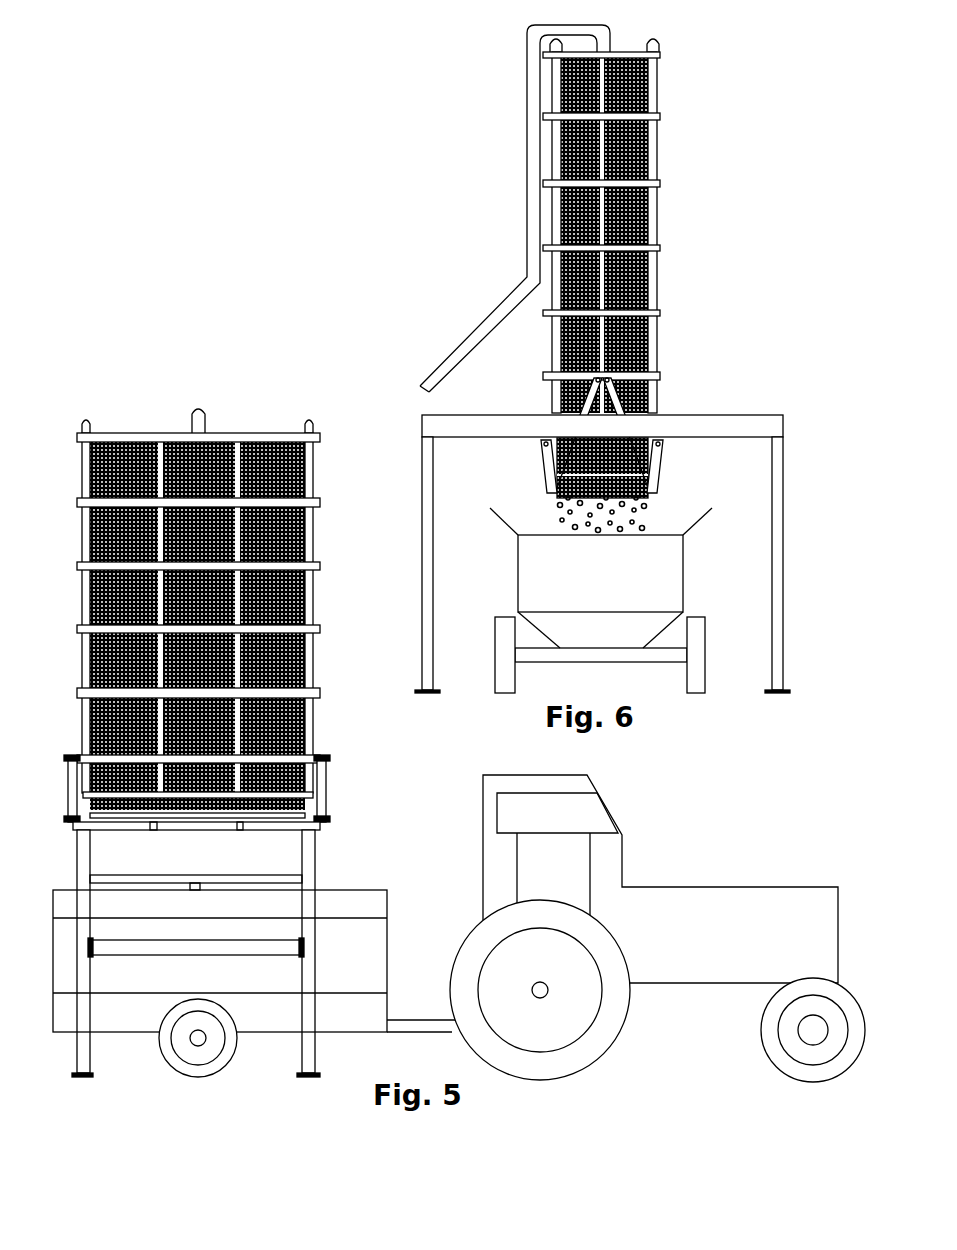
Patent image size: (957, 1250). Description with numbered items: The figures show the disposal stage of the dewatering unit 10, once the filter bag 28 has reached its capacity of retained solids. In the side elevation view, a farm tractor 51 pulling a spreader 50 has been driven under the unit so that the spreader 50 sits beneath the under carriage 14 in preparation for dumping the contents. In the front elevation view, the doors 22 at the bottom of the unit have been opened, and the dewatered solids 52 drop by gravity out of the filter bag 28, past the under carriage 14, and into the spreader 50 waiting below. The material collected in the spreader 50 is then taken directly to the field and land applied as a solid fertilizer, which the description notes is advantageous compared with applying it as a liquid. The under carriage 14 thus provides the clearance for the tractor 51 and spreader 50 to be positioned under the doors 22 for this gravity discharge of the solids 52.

In FIG. 6, the sifter tower 10 is at (647, 33).
In FIG. 6, the under carriage 14 is at (768, 408).
In FIG. 6, the doors 22 is at (548, 470).
In FIG. 6, the filter bag 28 is at (607, 463).
In FIG. 6, the spreader 50 is at (542, 592).
In FIG. 5, the spreader 50 is at (330, 905).
In FIG. 5, the farm tractor 51 is at (530, 885).
In FIG. 6, the dewatered solids 52 is at (647, 507).